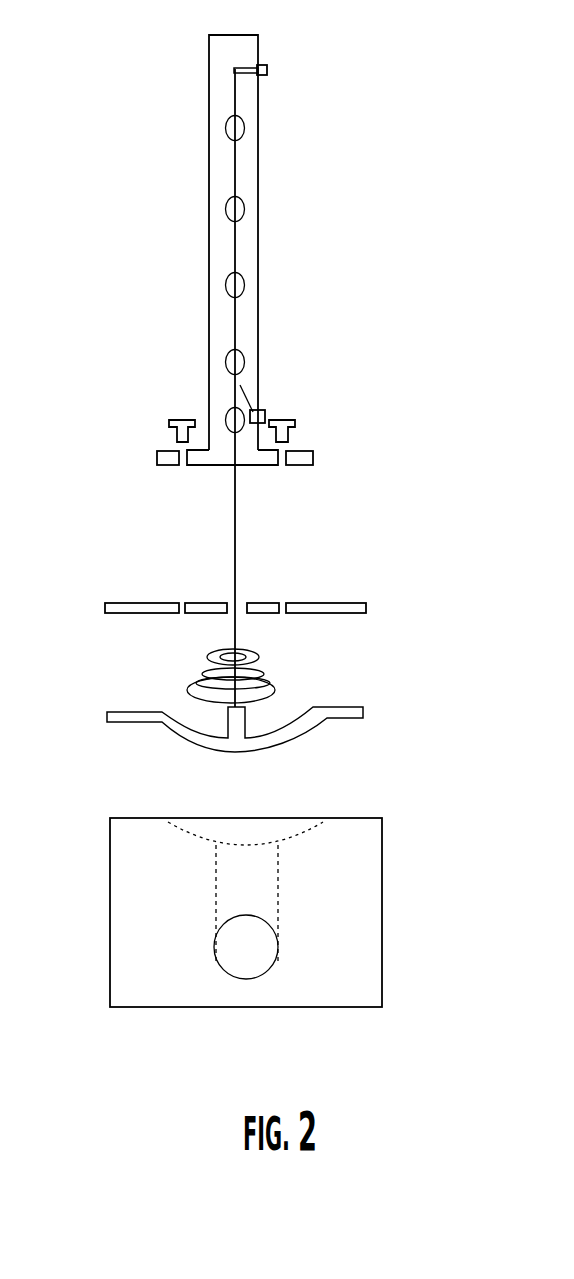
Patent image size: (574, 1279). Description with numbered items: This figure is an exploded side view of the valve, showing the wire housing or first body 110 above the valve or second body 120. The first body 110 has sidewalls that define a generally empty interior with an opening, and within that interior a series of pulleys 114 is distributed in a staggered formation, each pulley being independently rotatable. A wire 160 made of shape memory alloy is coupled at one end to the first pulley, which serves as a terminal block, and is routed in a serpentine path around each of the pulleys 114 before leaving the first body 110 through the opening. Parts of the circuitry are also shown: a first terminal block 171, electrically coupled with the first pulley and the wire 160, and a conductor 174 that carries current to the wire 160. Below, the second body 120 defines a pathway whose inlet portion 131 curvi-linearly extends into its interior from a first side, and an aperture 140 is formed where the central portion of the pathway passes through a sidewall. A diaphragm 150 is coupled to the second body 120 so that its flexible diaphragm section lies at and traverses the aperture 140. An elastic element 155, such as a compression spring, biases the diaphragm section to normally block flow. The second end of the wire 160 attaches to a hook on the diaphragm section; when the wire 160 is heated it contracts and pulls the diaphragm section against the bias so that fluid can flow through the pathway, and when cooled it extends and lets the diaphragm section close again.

The first body 110 is at (260, 50).
The pulleys 114 is at (247, 126).
The second body 120 is at (172, 960).
The inlet portion 131 is at (274, 961).
The aperture 140 is at (181, 790).
The diaphragm 150 is at (326, 718).
The elastic element 155 is at (262, 668).
The wire 160 is at (237, 177).
The first terminal block 171 is at (268, 70).
The conductor 174 is at (242, 381).